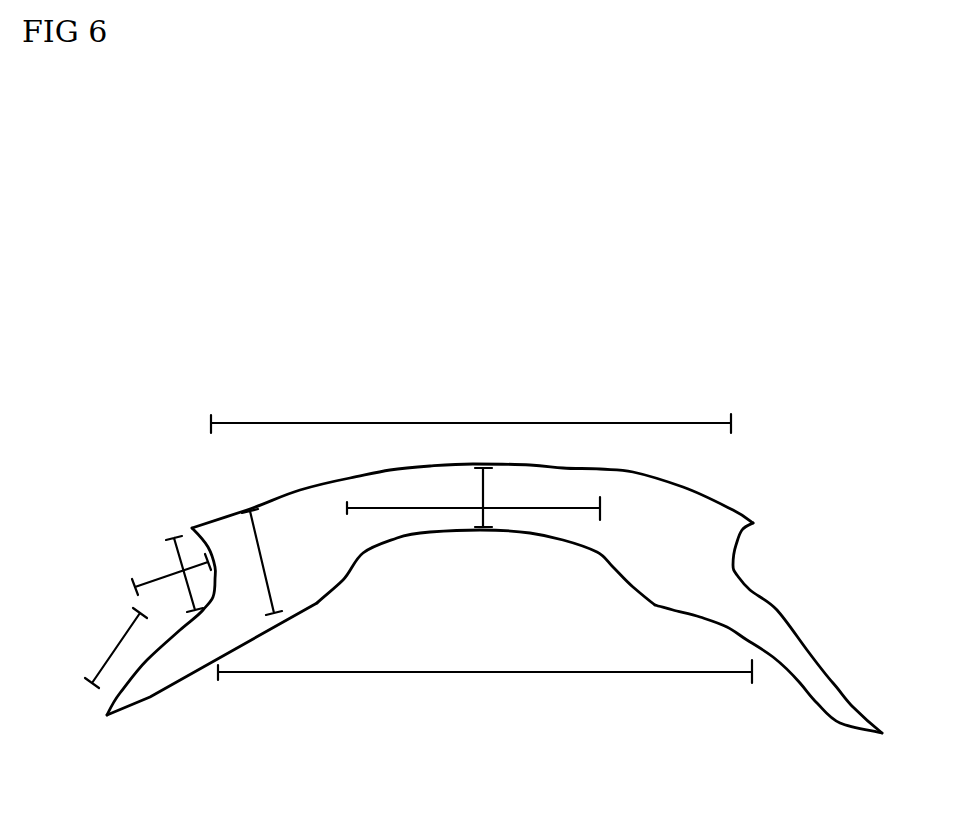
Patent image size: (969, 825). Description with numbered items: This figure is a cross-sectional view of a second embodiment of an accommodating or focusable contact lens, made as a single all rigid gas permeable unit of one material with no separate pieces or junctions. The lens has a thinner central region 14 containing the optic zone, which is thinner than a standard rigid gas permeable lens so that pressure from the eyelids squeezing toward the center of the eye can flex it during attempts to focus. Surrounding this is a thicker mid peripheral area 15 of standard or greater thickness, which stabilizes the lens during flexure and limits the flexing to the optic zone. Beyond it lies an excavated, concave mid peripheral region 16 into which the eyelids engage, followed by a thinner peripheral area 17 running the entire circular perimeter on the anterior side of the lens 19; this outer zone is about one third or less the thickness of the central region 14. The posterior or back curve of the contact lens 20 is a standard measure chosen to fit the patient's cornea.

The central region 14 is at (473, 497).
The thicker mid peripheral area 15 is at (269, 562).
The excavated, concave mid peripheral region 16 is at (171, 574).
The thinner peripheral area 17 is at (116, 648).
The anterior side of the lens 19 is at (471, 410).
The posterior or back curve of the contact lens 20 is at (485, 683).